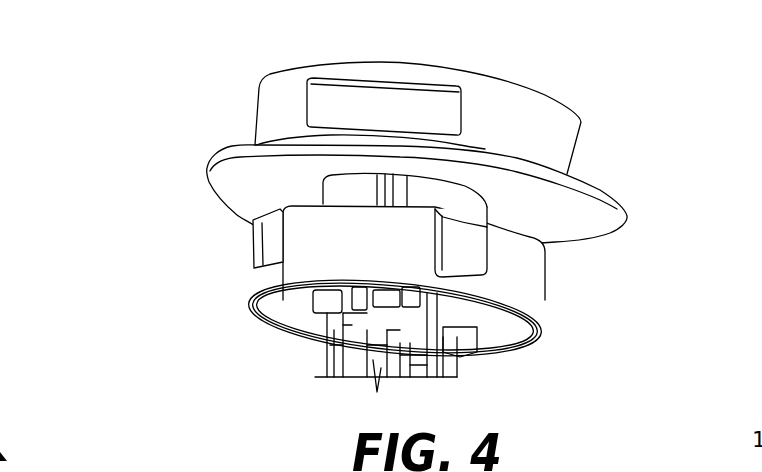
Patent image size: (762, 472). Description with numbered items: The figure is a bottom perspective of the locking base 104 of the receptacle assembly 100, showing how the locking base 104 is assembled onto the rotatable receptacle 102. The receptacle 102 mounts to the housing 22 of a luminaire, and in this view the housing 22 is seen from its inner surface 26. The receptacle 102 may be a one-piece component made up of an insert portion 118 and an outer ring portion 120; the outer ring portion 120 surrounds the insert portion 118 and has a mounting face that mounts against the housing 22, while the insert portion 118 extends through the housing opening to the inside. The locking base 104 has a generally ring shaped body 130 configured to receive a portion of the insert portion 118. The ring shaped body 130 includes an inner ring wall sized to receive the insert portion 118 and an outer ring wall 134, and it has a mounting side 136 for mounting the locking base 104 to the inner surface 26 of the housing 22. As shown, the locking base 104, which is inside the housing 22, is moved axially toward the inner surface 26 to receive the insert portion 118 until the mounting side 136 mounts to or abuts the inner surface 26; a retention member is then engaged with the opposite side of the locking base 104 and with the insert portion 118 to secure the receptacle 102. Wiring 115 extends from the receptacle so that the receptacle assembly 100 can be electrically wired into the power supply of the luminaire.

The receptacle assembly 100 is at (668, 93).
The rotatable receptacle 102 is at (245, 90).
The locking base 104 is at (307, 245).
The wiring 115 is at (440, 365).
The insert portion 118 is at (460, 208).
The outer ring portion 120 is at (553, 130).
The housing 22 is at (629, 223).
The inner surface 26 is at (585, 236).
The ring shaped body 130 is at (250, 287).
The outer ring wall 134 is at (533, 310).
The mounting side 136 is at (298, 205).